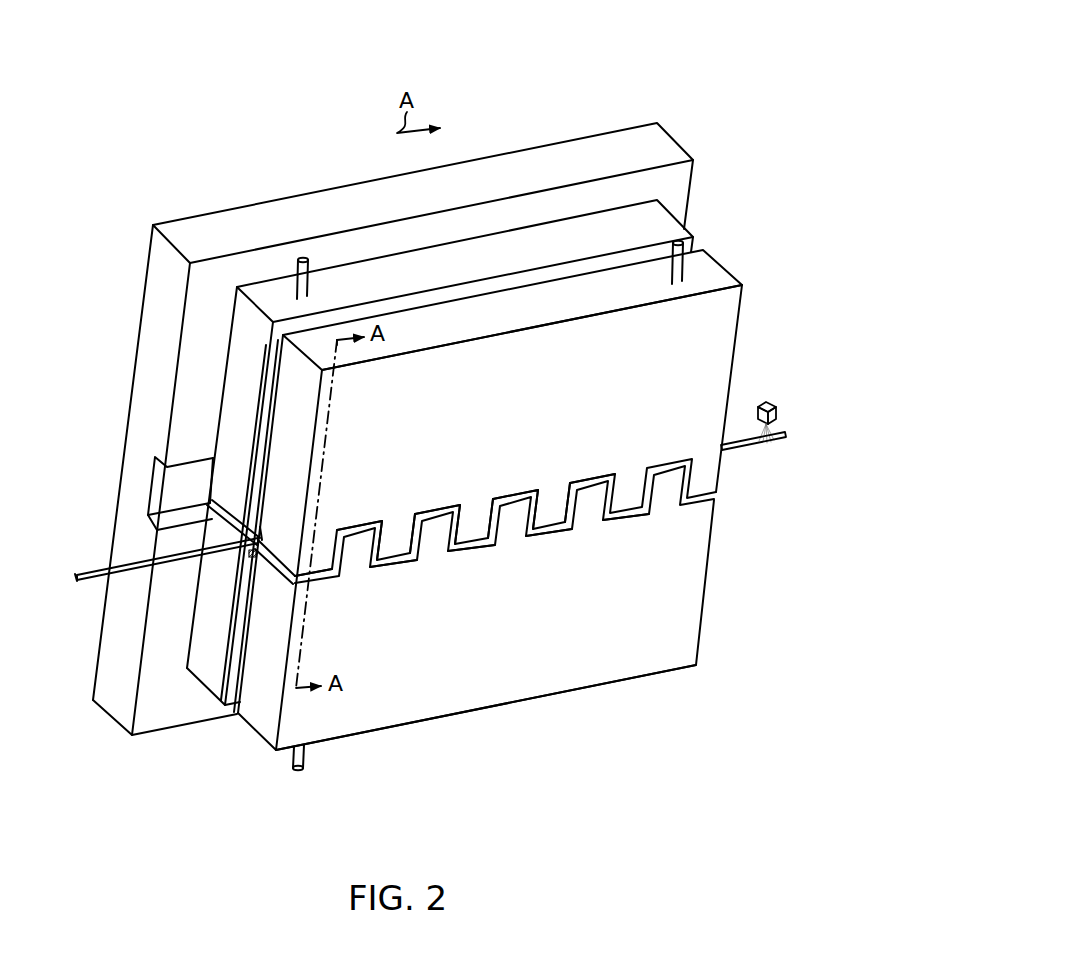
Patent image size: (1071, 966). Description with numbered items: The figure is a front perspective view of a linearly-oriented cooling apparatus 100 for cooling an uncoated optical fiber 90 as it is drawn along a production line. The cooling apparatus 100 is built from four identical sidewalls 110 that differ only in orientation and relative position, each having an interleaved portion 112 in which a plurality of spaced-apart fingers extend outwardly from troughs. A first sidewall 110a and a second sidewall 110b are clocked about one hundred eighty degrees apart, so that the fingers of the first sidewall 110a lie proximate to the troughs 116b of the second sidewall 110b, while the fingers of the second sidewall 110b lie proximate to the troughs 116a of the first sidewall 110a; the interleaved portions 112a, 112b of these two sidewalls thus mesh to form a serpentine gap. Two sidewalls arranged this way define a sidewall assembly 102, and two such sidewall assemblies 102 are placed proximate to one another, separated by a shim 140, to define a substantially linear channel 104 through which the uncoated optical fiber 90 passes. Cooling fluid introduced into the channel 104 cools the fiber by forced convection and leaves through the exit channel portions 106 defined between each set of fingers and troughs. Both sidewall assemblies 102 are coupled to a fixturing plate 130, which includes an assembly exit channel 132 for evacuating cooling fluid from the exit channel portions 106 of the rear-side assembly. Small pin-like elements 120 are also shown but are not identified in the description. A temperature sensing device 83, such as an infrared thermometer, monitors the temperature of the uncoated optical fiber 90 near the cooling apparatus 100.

The cooling apparatus 100 is at (679, 41).
The sidewall assembly 102 is at (455, 500).
The channel 104 is at (258, 554).
The exit channel portion 106 is at (378, 568).
The sidewall 110 is at (441, 482).
The first sidewall 110a is at (573, 292).
The second sidewall 110b is at (544, 687).
The interleaved portion 112 is at (485, 491).
The first slit wall segment 112a is at (391, 549).
The second slit wall segment 112b is at (430, 536).
The troughs of the first sidewall 116a is at (356, 530).
The troughs of the second sidewall 116b is at (396, 571).
The alignment pin 120 is at (309, 283).
The fixturing plate 130 is at (565, 158).
The assembly exit channel 132 is at (155, 510).
The shim 140 is at (267, 462).
The temperature sensing device 83 is at (775, 404).
The uncoated optical fiber 90 is at (757, 448).